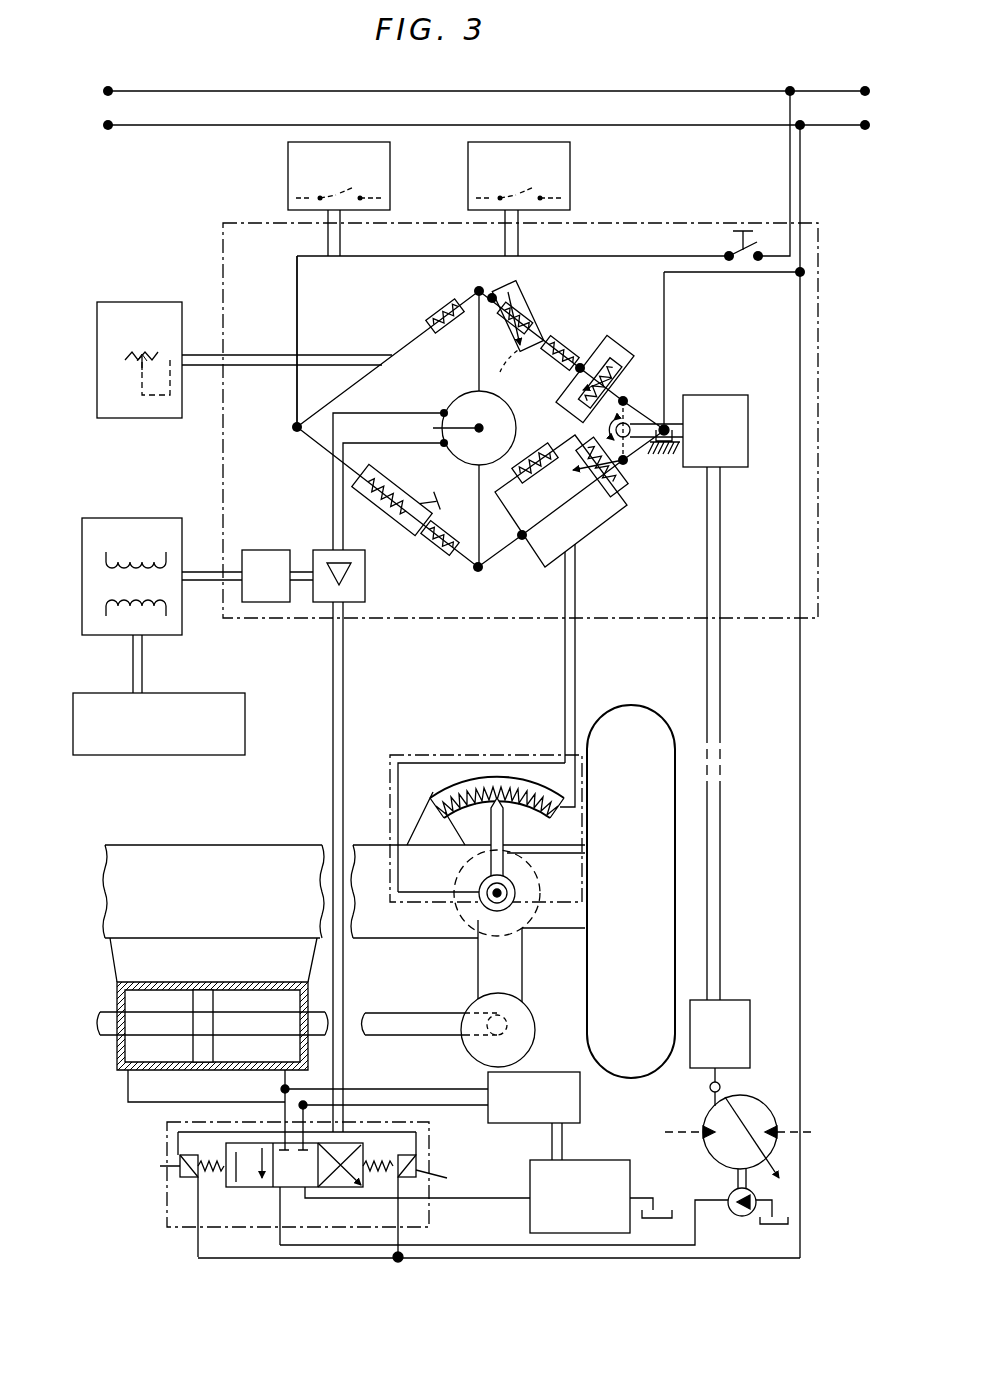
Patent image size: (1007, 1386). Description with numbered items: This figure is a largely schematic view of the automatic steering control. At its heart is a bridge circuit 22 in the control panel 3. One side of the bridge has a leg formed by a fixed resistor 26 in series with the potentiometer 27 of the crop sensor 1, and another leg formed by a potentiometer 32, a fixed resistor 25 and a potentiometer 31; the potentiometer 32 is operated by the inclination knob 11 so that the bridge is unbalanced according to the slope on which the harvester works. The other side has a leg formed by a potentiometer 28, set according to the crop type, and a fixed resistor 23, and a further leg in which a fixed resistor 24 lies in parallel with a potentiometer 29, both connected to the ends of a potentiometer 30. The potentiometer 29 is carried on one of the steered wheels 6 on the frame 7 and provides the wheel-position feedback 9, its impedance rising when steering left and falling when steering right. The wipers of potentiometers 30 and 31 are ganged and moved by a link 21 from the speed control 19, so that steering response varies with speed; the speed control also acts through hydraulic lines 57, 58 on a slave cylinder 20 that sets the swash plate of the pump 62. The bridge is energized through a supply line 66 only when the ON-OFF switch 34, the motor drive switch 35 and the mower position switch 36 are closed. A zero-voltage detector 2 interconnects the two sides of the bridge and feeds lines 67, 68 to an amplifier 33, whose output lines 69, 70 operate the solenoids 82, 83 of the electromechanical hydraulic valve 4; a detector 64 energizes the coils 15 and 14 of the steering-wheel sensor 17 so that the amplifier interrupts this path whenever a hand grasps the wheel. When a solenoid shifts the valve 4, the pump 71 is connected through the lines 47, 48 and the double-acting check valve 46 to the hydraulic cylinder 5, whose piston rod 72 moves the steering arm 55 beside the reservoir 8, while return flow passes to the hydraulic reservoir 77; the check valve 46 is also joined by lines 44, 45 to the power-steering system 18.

The crop sensor 1 is at (133, 424).
The zero-voltage detector 2 is at (466, 402).
The control panel 3 is at (494, 624).
The electromechanical hydraulic valve 4 is at (295, 1172).
The hydraulic cylinder 5 is at (232, 980).
The steered wheels 6 is at (622, 770).
The vehicle frame 7 is at (288, 900).
The reservoir 8 is at (182, 842).
The feedback 9 is at (426, 752).
The inclination input knob 11 is at (500, 368).
The coil 14 is at (108, 560).
The fixed coil 15 is at (106, 608).
The sensor 17 is at (130, 758).
The power-steering system 18 is at (544, 1216).
The speed control 19 is at (733, 394).
The slave cylinder 20 is at (738, 1010).
The link 21 is at (632, 456).
The bridge circuit 22 is at (393, 345).
The fixed resistor 23 is at (438, 553).
The fixed resistor 24 is at (537, 472).
The fixed resistor 25 is at (572, 338).
The fixed resistor 26 is at (432, 308).
The potentiometer 27 is at (125, 355).
The potentiometer 28 is at (400, 492).
The potentiometer 29 is at (550, 812).
The potentiometer 30 is at (596, 480).
The potentiometer 31 is at (620, 378).
The potentiometer 32 is at (528, 320).
The amplifier 33 is at (323, 550).
The ON-OFF switch 34 is at (745, 230).
The motor drive switch 35 is at (572, 160).
The mower position switch 36 is at (392, 160).
The hydraulic line 44 is at (550, 1142).
The hydraulic line 45 is at (565, 1142).
The double-acting check valve 46 is at (540, 1074).
The hydraulic line 47 is at (418, 1088).
The hydraulic line 48 is at (445, 1106).
The steering arm 55 is at (492, 975).
The hydraulic line 57 is at (722, 702).
The hydraulic line 58 is at (704, 672).
The pump 62 is at (752, 1115).
The detector 64 is at (268, 562).
The supply line 66 is at (296, 280).
The line 67 is at (366, 443).
The line 68 is at (378, 412).
The line 69 is at (347, 670).
The line 70 is at (330, 702).
The pump 71 is at (740, 1215).
The piston rod 72 is at (114, 1032).
The hydraulic reservoir 77 is at (655, 1212).
The solenoid 82 is at (162, 1166).
The solenoid 83 is at (418, 1208).